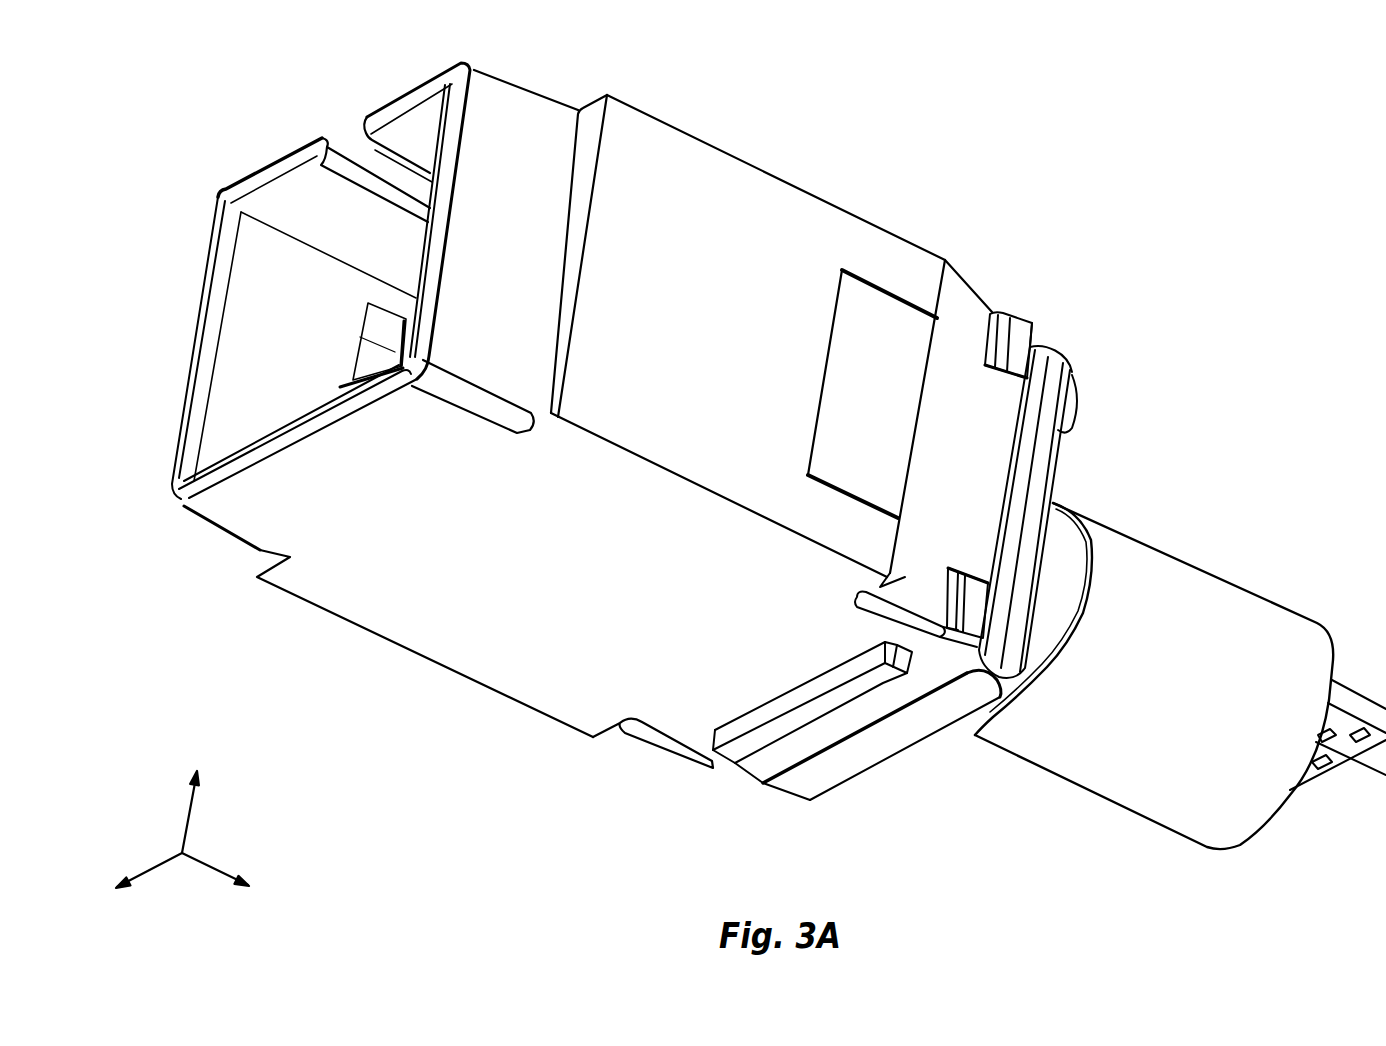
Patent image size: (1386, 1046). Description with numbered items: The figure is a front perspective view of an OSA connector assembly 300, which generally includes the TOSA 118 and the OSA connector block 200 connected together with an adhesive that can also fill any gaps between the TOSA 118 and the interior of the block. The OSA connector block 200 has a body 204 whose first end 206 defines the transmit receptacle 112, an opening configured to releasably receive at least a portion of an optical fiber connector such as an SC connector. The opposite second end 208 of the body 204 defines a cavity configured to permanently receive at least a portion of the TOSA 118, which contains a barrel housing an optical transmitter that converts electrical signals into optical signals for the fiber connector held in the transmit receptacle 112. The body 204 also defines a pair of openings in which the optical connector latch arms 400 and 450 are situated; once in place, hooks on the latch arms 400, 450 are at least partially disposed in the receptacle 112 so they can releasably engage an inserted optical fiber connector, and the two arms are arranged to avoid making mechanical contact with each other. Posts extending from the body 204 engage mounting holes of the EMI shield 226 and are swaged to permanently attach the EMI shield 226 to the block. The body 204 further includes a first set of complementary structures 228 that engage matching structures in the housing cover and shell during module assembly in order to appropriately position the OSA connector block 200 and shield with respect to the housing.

The OSA connector assembly 300 is at (1255, 110).
The OSA connector block 200 is at (722, 122).
The body 204 is at (663, 233).
The first end 206 is at (170, 481).
The transmit receptacle 112 is at (258, 352).
The optical connector latch arm 450 is at (950, 330).
The EMI shield 226 is at (1085, 390).
The TOSA 118 is at (1190, 555).
The second end 208 is at (963, 655).
The first set of complementary structures 228 is at (741, 752).
The optical connector latch arm 400 is at (640, 753).